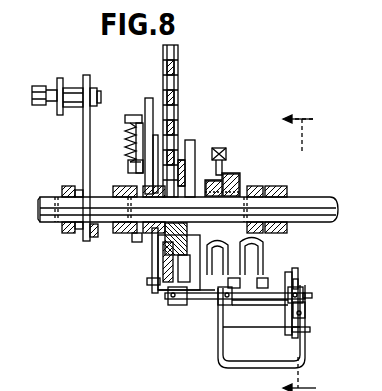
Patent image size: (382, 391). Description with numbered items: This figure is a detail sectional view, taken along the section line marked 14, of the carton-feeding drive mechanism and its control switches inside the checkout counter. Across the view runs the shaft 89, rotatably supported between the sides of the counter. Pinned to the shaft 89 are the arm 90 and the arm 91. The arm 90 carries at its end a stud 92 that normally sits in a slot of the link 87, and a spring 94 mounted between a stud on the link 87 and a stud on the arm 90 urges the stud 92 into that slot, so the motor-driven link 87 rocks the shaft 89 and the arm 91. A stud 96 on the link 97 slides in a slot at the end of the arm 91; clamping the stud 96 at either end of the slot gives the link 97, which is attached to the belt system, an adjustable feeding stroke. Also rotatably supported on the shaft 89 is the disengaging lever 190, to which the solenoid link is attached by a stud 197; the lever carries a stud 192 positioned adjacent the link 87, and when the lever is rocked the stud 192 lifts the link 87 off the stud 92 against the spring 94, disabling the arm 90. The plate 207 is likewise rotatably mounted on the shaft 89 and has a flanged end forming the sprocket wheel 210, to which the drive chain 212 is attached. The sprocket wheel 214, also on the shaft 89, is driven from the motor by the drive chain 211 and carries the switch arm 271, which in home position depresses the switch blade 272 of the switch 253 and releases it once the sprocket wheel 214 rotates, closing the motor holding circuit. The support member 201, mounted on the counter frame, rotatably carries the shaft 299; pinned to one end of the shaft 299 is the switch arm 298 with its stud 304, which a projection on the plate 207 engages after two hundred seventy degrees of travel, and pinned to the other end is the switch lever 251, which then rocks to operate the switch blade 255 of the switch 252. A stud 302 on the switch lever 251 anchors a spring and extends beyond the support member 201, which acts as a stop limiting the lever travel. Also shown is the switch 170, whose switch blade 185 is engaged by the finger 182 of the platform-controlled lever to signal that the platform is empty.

The section line 14 is at (314, 250).
The link 87 is at (145, 103).
The shaft 89 is at (303, 202).
The arm 90 is at (133, 180).
The arm 91 is at (83, 136).
The stud 92 is at (153, 125).
The spring 94 is at (124, 135).
The stud 96 is at (72, 92).
The link 97 is at (61, 78).
The switch 170 is at (267, 313).
The finger 182 is at (290, 272).
The switch blade 185 is at (292, 277).
The disengaging lever 190 is at (155, 262).
The stud 192 is at (143, 153).
The stud 197 is at (150, 284).
The support member 201 is at (305, 350).
The plate 207 is at (196, 147).
The sprocket wheel 210 is at (165, 238).
The drive chain 211 is at (224, 153).
The drive chain 212 is at (180, 62).
The sprocket wheel 214 is at (224, 178).
The switch lever 251 is at (305, 308).
The switch 252 is at (298, 318).
The switch 253 is at (233, 310).
The switch blade 255 is at (298, 283).
The switch arm 271 is at (246, 243).
The switch blade 272 is at (258, 258).
The switch arm 298 is at (190, 304).
The shaft 299 is at (312, 295).
The stud 302 is at (310, 331).
The stud 304 is at (196, 330).